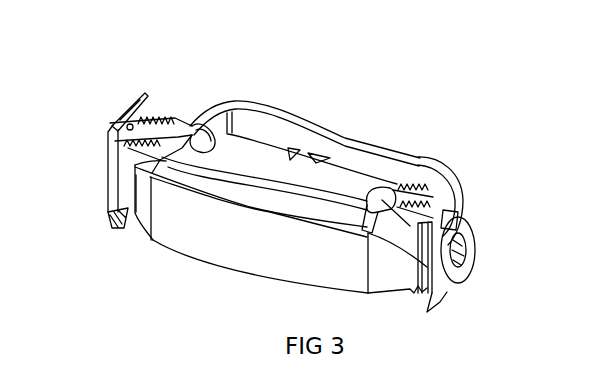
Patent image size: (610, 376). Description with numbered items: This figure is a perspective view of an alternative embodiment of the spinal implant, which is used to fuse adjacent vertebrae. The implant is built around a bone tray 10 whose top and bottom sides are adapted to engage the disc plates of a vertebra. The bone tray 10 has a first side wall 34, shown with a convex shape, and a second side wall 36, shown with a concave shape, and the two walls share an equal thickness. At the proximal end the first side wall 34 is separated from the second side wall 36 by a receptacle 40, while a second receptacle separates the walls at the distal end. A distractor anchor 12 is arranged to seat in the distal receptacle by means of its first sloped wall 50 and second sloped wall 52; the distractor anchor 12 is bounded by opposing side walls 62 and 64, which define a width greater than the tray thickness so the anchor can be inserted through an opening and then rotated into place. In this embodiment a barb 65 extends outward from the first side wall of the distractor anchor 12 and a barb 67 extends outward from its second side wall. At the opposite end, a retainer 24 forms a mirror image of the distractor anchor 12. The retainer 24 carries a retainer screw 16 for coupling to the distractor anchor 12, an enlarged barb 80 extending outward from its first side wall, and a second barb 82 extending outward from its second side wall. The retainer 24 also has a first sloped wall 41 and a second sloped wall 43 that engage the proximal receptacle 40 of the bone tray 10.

The bone tray 10 is at (312, 183).
The distractor anchor 12 is at (126, 193).
The retainer screw 16 is at (450, 268).
The retainer 24 is at (448, 195).
The first side wall 34 is at (252, 253).
The second side wall 36 is at (318, 134).
The receptacle 40 is at (381, 188).
The first sloped wall 41 is at (418, 187).
The second sloped wall 43 is at (416, 224).
The first sloped wall 50 is at (205, 112).
The second sloped wall 52 is at (147, 222).
The side wall 62 is at (139, 124).
The side wall 64 is at (127, 153).
The barb 65 is at (128, 107).
The barb 67 is at (118, 230).
The enlarged barb 80 is at (456, 190).
The second barb 82 is at (428, 311).